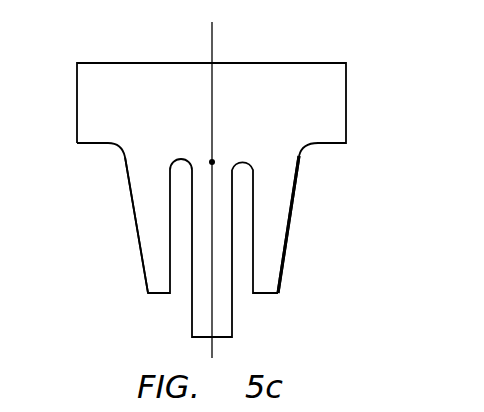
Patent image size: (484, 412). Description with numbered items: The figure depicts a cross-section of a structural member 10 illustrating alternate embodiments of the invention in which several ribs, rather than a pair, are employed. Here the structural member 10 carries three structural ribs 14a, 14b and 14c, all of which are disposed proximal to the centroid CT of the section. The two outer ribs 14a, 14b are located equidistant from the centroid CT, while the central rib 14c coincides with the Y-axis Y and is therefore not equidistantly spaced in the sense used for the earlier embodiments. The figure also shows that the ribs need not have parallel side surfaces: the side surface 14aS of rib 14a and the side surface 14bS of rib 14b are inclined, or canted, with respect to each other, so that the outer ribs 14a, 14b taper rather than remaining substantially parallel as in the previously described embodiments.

The structural member 10 is at (338, 86).
The structural rib 14a is at (280, 192).
The side surface of structural rib 14aS is at (288, 248).
The structural rib 14b is at (140, 194).
The side surface of structural rib 14bS is at (140, 252).
The central structural rib 14c is at (220, 313).
The Y-axis Y is at (212, 47).
The centroid CT is at (212, 162).